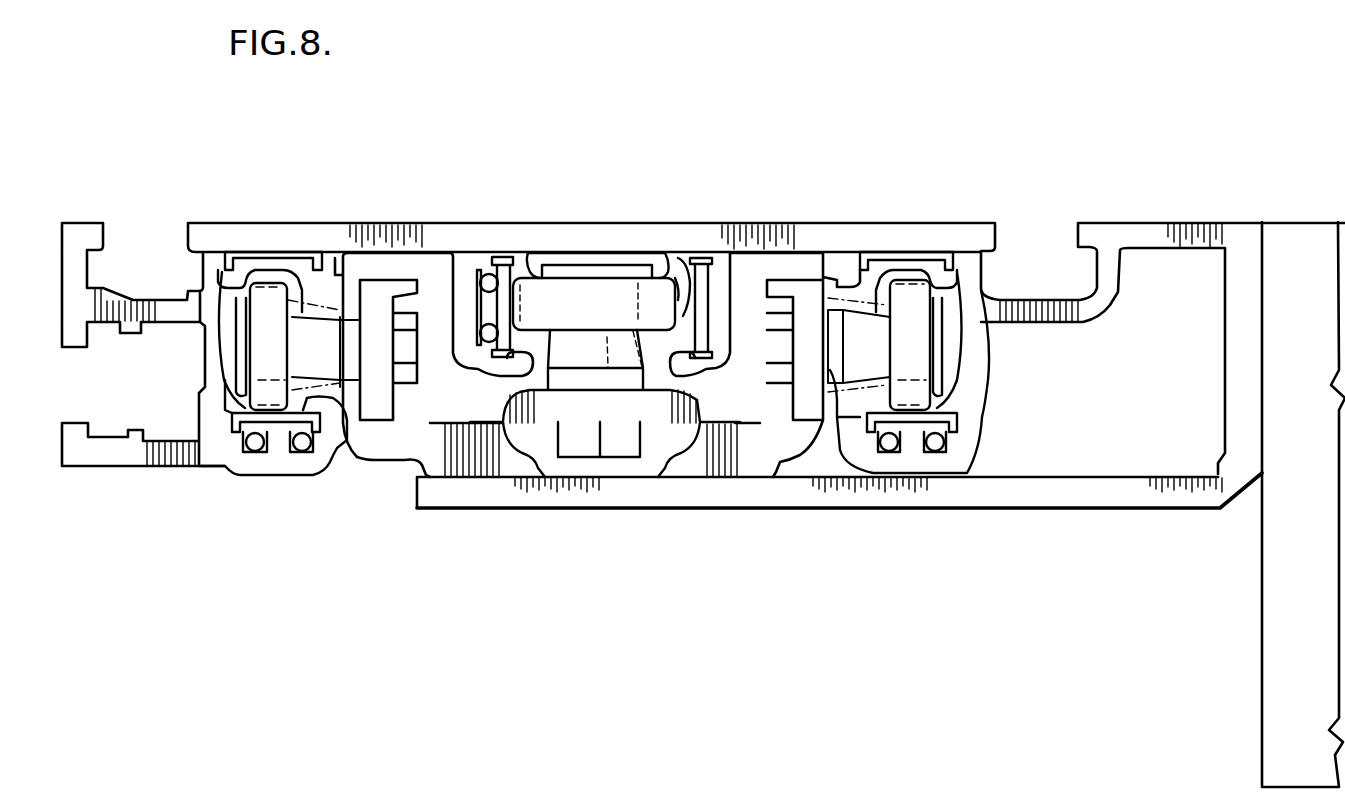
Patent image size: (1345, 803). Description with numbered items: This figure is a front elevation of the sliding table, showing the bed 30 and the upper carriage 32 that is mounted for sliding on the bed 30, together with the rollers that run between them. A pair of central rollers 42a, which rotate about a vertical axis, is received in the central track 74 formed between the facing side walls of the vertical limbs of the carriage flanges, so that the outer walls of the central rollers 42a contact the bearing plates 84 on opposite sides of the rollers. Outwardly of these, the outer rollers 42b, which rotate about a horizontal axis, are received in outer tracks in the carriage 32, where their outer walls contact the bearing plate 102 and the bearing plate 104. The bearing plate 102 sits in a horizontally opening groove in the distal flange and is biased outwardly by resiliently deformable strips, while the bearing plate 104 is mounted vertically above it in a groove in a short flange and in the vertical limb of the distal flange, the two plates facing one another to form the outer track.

The bed 30 is at (683, 510).
The upper carriage 32 is at (799, 224).
The central rollers 42a is at (658, 258).
The outer rollers 42b is at (298, 268).
The central track 74 is at (599, 253).
The bearing plates 84 is at (523, 257).
The bearing plate 102 is at (318, 398).
The bearing plate 104 is at (218, 282).